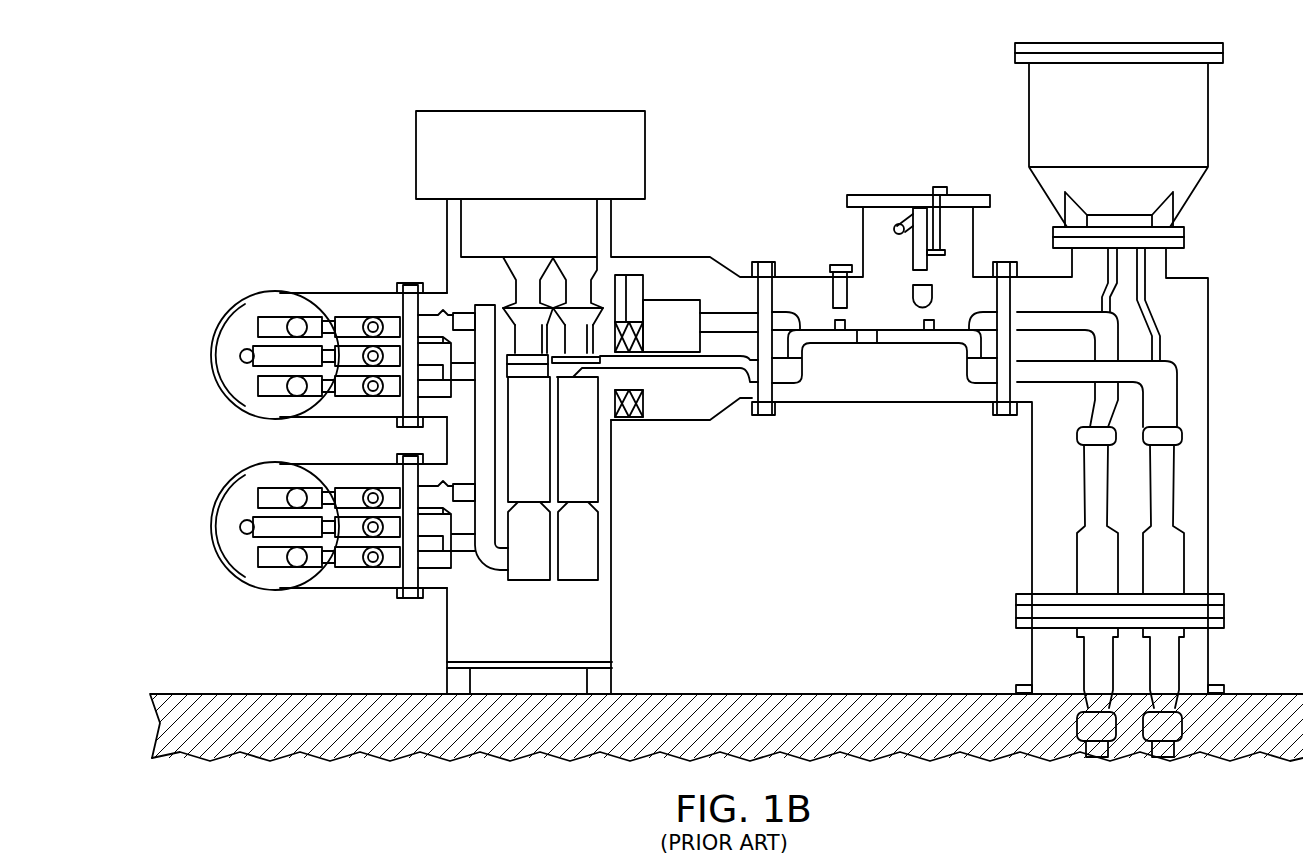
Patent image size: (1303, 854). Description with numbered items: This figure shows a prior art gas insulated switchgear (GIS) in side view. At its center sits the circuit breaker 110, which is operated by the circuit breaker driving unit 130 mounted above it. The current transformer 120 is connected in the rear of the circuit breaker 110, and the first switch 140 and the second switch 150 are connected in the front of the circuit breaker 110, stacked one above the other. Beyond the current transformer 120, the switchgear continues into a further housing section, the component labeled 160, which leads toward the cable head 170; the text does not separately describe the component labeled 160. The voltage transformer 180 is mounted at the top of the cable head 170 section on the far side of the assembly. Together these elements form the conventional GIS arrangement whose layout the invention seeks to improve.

The circuit breaker 110 is at (603, 623).
The current transformer 120 is at (685, 408).
The circuit breaker driving unit 130 is at (638, 150).
The first switch 140 is at (222, 357).
The second switch 150 is at (222, 528).
The valve housing 160 is at (880, 207).
The cable head 170 is at (1200, 458).
The voltage transformer 180 is at (1200, 116).